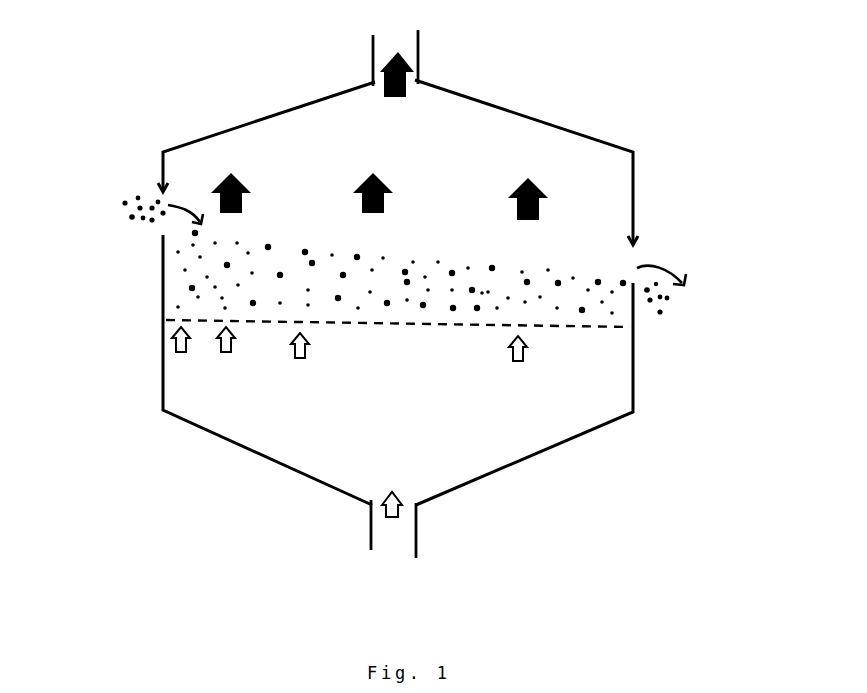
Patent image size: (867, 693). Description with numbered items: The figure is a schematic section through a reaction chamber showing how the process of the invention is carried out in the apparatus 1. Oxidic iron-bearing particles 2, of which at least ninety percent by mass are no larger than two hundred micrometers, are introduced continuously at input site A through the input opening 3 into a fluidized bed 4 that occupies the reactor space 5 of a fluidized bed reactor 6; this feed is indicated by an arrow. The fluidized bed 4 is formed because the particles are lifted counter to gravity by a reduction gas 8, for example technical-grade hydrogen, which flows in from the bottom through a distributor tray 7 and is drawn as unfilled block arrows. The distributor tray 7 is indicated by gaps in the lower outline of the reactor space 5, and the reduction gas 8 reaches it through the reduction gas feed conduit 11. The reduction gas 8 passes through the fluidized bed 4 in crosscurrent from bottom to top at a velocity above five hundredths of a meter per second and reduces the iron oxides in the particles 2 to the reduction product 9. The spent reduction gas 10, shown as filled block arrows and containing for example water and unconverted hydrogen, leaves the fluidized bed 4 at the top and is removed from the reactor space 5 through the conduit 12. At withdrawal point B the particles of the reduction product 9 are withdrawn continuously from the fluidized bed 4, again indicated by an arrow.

The apparatus 1 is at (728, 31).
The oxidic iron-bearing particles 2 is at (122, 201).
The input opening 3 is at (116, 105).
The fluidized bed 4 is at (180, 296).
The reactor space 5 is at (692, 327).
The fluidized bed reactor 6 is at (614, 535).
The distributor tray 7 is at (607, 330).
The reduction gas 8 is at (367, 508).
The reduction product 9 is at (657, 317).
The spent reduction gas 10 is at (554, 209).
The reduction gas feed conduit 11 is at (418, 535).
The reduction gas feed conduit 12 is at (371, 60).
The input site A is at (77, 338).
The withdrawal point B is at (690, 160).